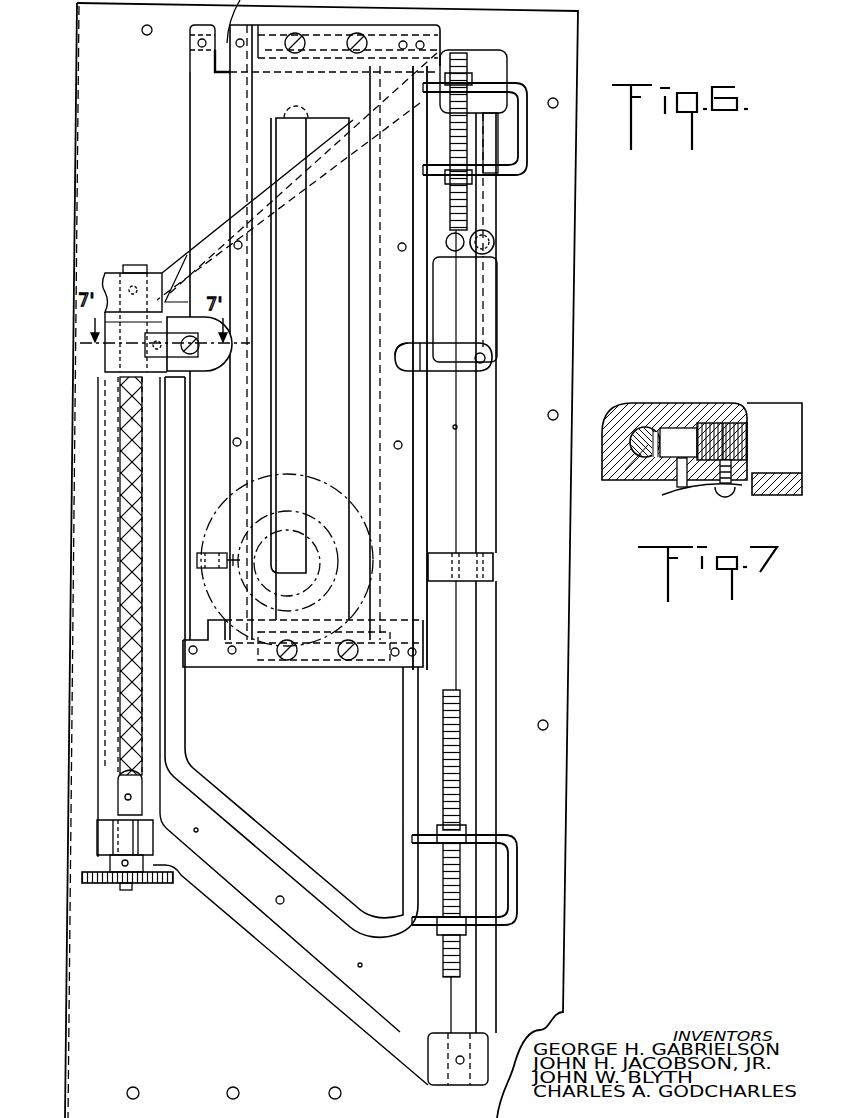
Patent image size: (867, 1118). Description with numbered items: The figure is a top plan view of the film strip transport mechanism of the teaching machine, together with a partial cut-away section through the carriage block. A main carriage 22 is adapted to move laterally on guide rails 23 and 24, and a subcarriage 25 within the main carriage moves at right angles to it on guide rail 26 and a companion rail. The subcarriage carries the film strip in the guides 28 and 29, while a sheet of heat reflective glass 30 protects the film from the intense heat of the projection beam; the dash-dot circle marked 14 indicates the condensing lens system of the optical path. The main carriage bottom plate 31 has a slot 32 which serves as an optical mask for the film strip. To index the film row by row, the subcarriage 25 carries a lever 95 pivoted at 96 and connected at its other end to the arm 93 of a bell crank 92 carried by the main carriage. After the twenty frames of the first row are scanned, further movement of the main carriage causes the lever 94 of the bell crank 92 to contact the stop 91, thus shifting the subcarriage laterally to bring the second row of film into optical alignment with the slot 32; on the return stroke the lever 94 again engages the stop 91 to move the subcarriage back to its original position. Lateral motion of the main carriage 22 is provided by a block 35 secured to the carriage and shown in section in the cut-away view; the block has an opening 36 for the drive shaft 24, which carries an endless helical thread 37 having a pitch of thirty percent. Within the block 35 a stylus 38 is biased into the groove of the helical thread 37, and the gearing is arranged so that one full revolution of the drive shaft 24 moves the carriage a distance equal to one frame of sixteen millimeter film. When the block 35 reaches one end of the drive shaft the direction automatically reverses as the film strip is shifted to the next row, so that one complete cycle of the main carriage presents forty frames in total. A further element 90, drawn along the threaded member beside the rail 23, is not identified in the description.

In FIG. 6, the condensing lens system 14 is at (318, 515).
In FIG. 6, the main carriage 22 is at (498, 655).
In FIG. 6, the guide rail 23 is at (470, 702).
In FIG. 6, the drive shaft 24 is at (118, 625).
In FIG. 7, the drive shaft 24 is at (640, 465).
In FIG. 6, the subcarriage 25 is at (340, 400).
In FIG. 6, the guide rail 26 is at (216, 668).
In FIG. 6, the film strip guide 28 is at (242, 168).
In FIG. 6, the film strip guide 29 is at (400, 228).
In FIG. 6, the heat reflective glass sheet 30 is at (218, 515).
In FIG. 6, the main carriage bottom plate 31 is at (347, 760).
In FIG. 6, the slot 32 is at (300, 283).
In FIG. 6, the block 35 is at (128, 283).
In FIG. 7, the block 35 is at (618, 410).
In FIG. 7, the opening 36 is at (646, 428).
In FIG. 6, the endless helical thread 37 is at (120, 520).
In FIG. 7, the endless helical thread 37 is at (608, 448).
In FIG. 7, the stylus 38 is at (688, 428).
In FIG. 6, the scale rod 90 is at (456, 778).
In FIG. 6, the stop 91 is at (463, 195).
In FIG. 6, the bell crank 92 is at (497, 328).
In FIG. 6, the arm 93 is at (487, 303).
In FIG. 6, the lever 94 is at (477, 232).
In FIG. 6, the lever 95 is at (447, 362).
In FIG. 6, the pivot 96 is at (412, 343).